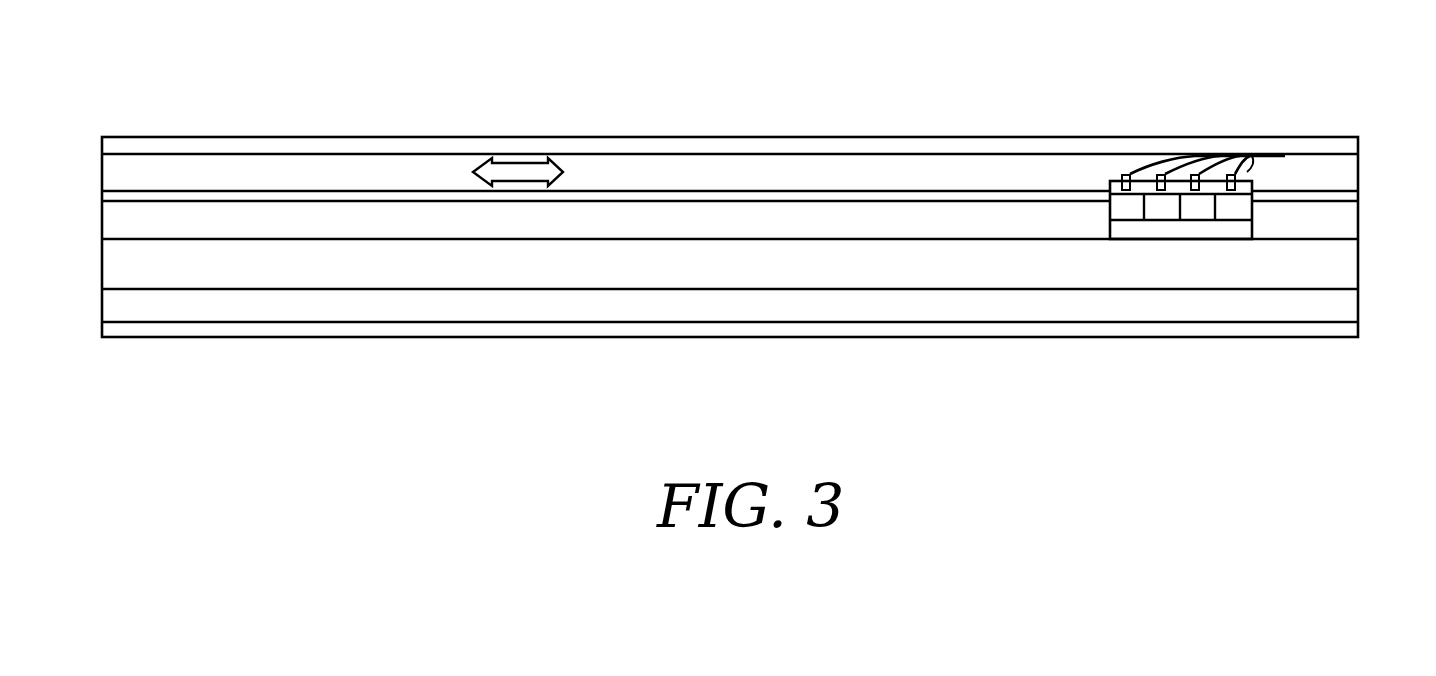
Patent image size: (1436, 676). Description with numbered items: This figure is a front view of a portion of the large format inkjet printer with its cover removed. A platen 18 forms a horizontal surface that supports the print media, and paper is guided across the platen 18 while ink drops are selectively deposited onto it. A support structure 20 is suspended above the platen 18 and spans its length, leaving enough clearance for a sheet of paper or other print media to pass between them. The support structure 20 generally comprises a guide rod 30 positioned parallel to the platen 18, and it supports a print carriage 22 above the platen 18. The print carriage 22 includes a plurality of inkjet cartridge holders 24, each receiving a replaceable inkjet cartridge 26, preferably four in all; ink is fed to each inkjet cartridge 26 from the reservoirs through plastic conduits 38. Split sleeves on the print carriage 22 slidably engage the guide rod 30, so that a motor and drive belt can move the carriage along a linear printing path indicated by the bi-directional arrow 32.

The platen 18 is at (517, 243).
The support structure 20 is at (230, 167).
The print carriage 22 is at (1245, 172).
The inkjet cartridge holders 24 is at (1250, 227).
The inkjet cartridge 26 is at (1117, 208).
The guide rod 30 is at (685, 193).
The bi-directional arrow 32 is at (524, 167).
The plastic conduits 38 is at (1143, 165).